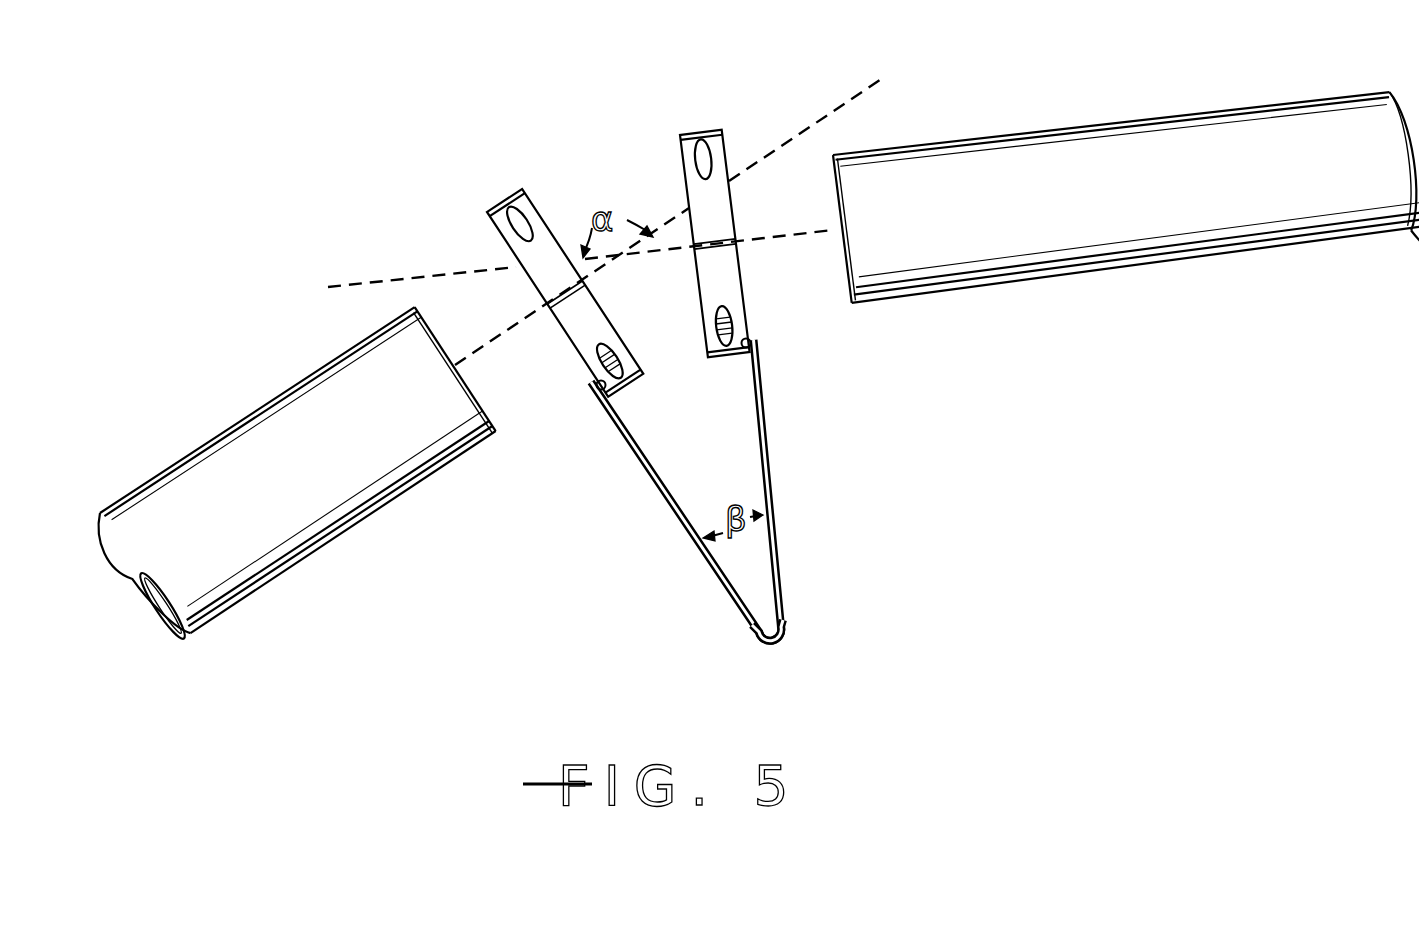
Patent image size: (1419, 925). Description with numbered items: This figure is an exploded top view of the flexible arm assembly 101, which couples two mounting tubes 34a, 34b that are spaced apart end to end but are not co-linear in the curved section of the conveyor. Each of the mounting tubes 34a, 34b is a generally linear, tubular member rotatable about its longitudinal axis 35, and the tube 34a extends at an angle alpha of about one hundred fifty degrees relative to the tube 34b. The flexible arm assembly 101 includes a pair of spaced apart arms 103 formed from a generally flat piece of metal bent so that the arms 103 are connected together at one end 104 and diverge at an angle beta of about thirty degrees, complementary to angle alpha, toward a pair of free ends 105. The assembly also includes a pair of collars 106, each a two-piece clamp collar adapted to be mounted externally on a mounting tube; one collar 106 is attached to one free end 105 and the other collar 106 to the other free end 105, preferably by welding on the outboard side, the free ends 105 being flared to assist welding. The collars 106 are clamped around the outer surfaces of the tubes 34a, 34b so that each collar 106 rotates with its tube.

The mounting tube 34a is at (225, 427).
The mounting tube 34b is at (1087, 123).
The longitudinal axis 35 is at (397, 280).
The flexible arm assembly 101 is at (752, 512).
The arms 103 is at (648, 481).
The end 104 is at (783, 641).
The free ends 105 is at (587, 387).
The collars 106 is at (530, 190).